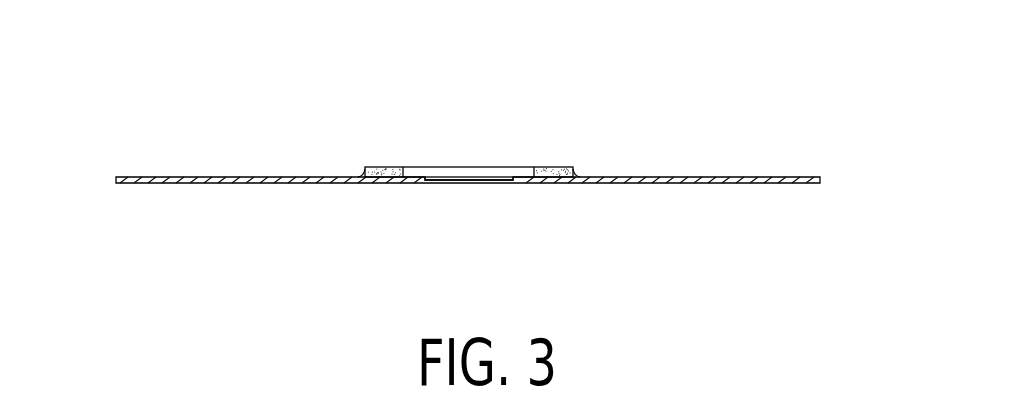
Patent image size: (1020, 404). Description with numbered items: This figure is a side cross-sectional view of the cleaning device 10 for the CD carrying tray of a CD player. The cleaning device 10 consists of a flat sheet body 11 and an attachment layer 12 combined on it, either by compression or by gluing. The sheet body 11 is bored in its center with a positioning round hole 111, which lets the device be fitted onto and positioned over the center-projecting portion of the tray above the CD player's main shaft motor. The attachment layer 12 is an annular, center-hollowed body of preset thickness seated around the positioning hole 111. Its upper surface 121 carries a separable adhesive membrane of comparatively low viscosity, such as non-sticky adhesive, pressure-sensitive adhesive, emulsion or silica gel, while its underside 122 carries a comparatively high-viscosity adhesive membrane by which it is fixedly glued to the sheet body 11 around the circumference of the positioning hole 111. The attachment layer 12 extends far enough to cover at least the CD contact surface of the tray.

The cleaning device 10 is at (757, 144).
The sheet body 11 is at (693, 184).
The positioning round hole 111 is at (487, 184).
The attachment layer 12 is at (566, 167).
The surface of the attachment layer 121 is at (555, 167).
The underside of the attachment layer 122 is at (563, 177).